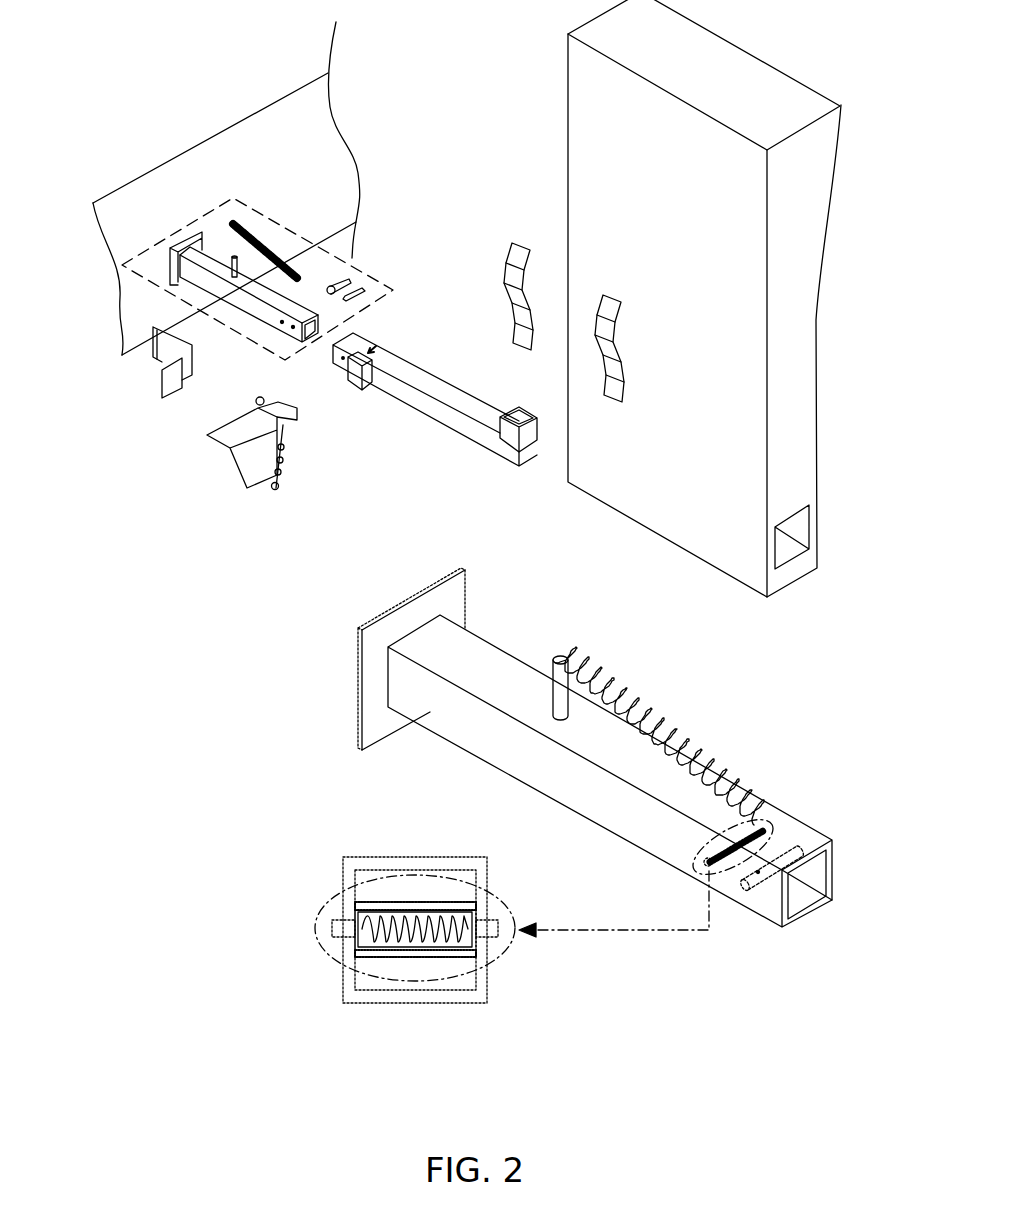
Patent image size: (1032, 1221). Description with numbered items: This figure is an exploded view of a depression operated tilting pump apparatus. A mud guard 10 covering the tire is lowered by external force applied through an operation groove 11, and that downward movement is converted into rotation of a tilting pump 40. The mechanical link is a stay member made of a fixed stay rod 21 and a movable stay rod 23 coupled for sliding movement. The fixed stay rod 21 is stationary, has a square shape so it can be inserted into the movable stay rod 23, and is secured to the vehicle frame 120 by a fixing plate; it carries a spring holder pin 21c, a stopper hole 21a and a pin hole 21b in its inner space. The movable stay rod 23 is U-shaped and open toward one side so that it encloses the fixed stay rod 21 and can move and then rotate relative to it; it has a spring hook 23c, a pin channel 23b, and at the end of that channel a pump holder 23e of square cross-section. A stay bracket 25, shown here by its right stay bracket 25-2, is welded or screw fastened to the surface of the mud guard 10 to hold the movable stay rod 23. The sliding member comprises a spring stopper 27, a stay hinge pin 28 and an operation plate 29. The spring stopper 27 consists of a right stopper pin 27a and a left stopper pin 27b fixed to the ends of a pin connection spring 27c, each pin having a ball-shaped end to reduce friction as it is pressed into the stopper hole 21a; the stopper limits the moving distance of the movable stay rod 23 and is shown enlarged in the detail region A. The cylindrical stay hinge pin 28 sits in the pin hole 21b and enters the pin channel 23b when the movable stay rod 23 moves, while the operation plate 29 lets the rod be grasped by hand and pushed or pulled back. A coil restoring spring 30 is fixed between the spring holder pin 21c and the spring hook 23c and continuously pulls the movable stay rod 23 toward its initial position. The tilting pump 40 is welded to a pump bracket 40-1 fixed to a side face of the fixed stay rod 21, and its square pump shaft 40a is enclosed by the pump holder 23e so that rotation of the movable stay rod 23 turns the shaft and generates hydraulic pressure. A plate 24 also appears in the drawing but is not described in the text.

The mud guard 10 is at (795, 321).
The operation groove 11 is at (796, 527).
The vehicle frame 120 is at (135, 185).
The fixed stay rod 21 is at (195, 247).
The stopper hole 21a is at (282, 322).
The pin hole 21b is at (293, 328).
The spring holder pin 21c is at (235, 253).
The movable stay rod 23 is at (490, 445).
The pin channel 23b is at (365, 373).
The spring hook 23c is at (369, 353).
The pump holder 23e is at (367, 388).
The mounting plate 24 is at (170, 262).
The stay bracket 25 is at (540, 134).
The right stay bracket 25-2 is at (512, 243).
The spring stopper 27 is at (350, 283).
The right stopper pin 27a is at (343, 935).
The left stopper pin 27b is at (490, 935).
The pin connection spring 27c is at (410, 942).
The stay hinge pin 28 is at (366, 289).
The operation plate 29 is at (520, 415).
The restoring spring 30 is at (247, 235).
The tilting pump 40 is at (236, 475).
The pump bracket 40-1 is at (172, 392).
The pump shaft 40a is at (290, 422).
The detail area A is at (305, 243).